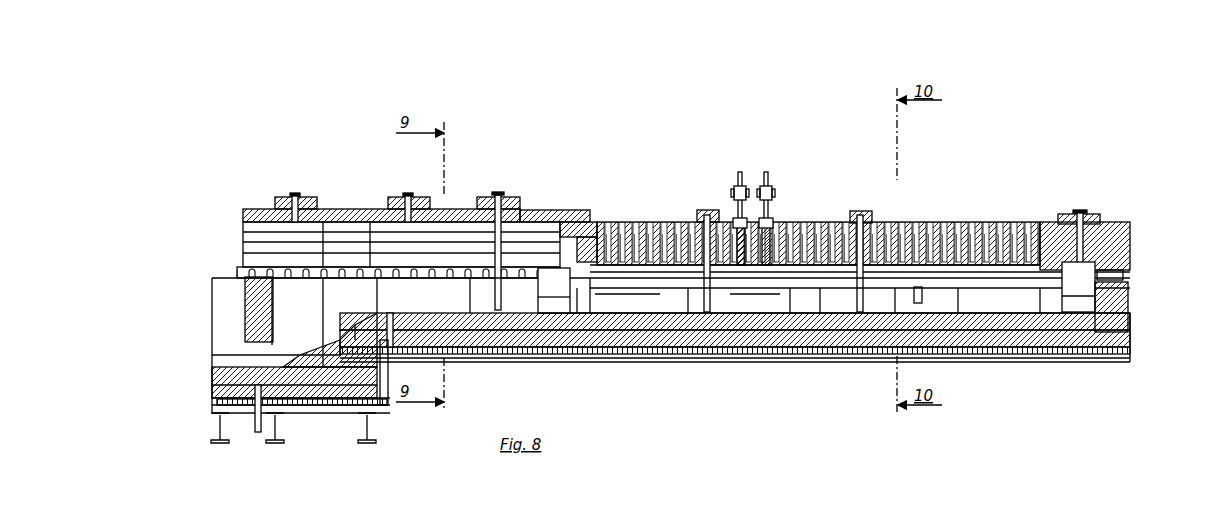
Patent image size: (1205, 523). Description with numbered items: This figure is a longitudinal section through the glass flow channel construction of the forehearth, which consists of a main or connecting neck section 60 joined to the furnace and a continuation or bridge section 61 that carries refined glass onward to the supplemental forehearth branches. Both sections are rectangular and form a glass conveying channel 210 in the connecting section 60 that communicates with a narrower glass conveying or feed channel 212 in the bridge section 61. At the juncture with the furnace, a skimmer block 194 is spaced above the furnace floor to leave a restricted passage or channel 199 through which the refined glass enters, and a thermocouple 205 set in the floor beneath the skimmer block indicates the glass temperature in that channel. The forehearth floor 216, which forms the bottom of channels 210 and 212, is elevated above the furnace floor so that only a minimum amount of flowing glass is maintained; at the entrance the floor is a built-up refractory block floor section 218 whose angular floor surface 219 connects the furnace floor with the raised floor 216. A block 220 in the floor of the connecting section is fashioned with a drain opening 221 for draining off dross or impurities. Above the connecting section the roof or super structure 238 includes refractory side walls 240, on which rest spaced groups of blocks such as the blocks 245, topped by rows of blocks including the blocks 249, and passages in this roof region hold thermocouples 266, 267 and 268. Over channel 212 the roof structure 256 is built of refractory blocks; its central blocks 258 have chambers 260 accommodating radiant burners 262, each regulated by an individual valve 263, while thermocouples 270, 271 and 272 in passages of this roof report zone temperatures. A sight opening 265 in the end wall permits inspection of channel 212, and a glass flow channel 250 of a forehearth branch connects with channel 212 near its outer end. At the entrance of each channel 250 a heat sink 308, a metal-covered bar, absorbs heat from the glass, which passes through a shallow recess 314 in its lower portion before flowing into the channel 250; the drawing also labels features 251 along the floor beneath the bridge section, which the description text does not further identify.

The connecting neck section 60 is at (555, 70).
The continuation or bridge section 61 is at (1097, 73).
The skimmer block 194 is at (245, 300).
The restricted passage or channel 199 is at (260, 345).
The thermocouple 205 is at (255, 406).
The glass conveying channel 210 is at (483, 295).
The glass conveying or feed channel 212 is at (817, 294).
The floor 216 is at (745, 309).
The built-up refractory block floor section 218 is at (333, 358).
The angular floor surface 219 is at (323, 353).
The block 220 is at (437, 320).
The drain opening 221 is at (395, 333).
The roof or super structure 238 is at (375, 208).
The side walls 240 is at (542, 260).
The blocks 245 is at (543, 229).
The blocks 249 is at (472, 209).
The glass flow channel 250 is at (816, 287).
The floor joint 251 is at (729, 303).
The roof structure 256 is at (1037, 220).
The blocks 258 is at (915, 240).
The chambers 260 is at (940, 242).
The burners 262 is at (742, 233).
The valves 263 is at (747, 192).
The sight opening 265 is at (1124, 276).
The thermocouple 266 is at (303, 185).
The thermocouple 267 is at (420, 185).
The thermocouple 268 is at (500, 250).
The thermocouple 270 is at (707, 211).
The thermocouple 271 is at (865, 210).
The thermocouple 272 is at (1083, 212).
The heat sink 308 is at (1122, 299).
The recess 314 is at (1064, 305).